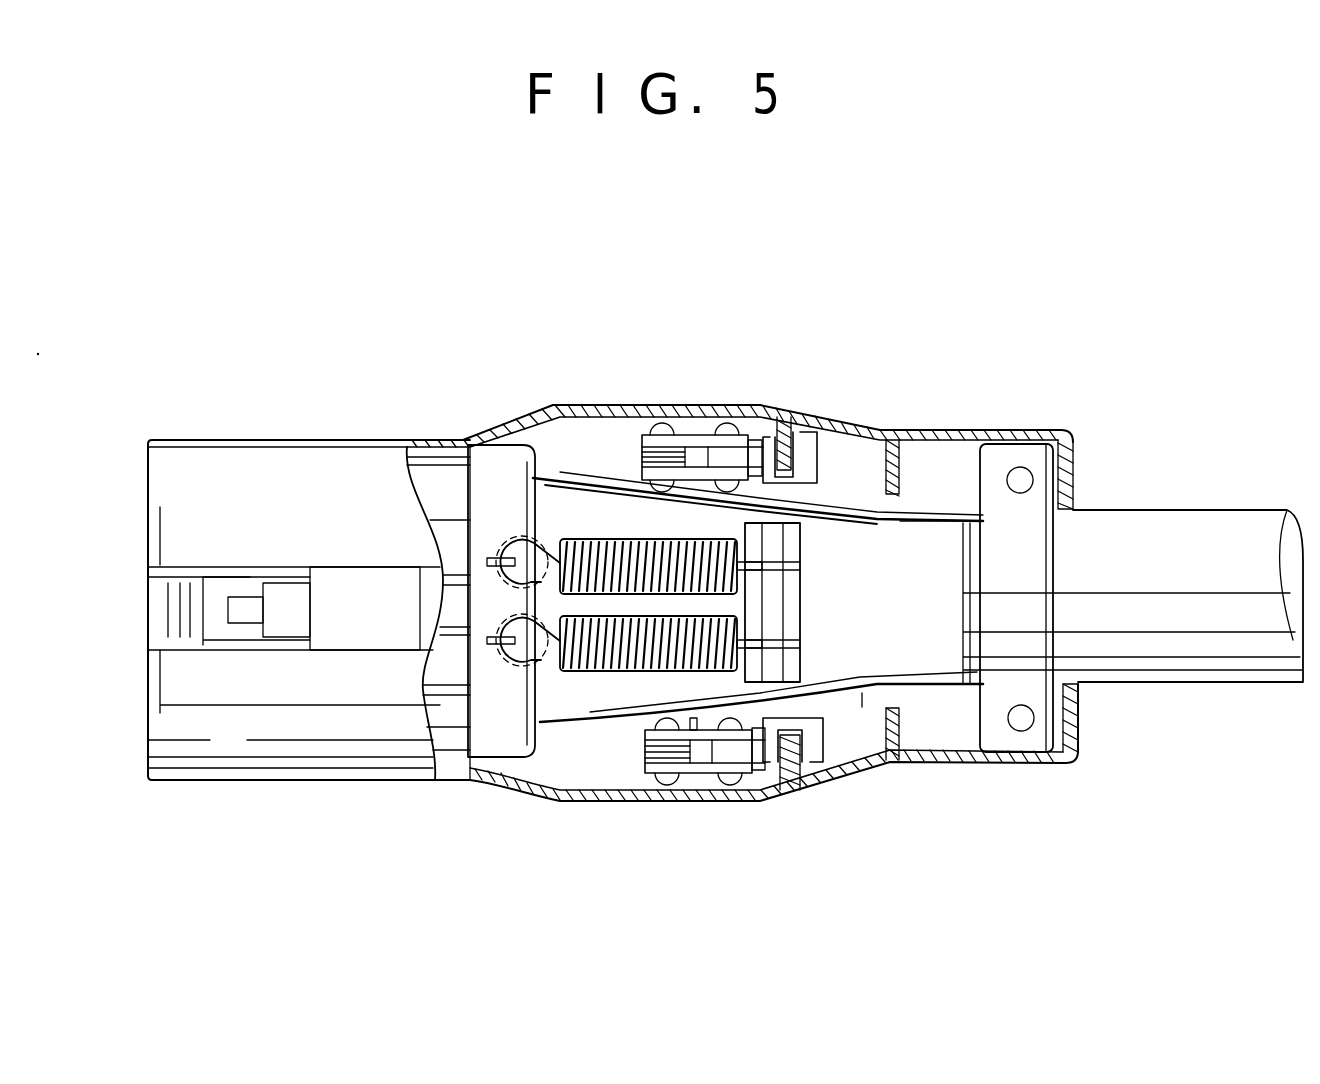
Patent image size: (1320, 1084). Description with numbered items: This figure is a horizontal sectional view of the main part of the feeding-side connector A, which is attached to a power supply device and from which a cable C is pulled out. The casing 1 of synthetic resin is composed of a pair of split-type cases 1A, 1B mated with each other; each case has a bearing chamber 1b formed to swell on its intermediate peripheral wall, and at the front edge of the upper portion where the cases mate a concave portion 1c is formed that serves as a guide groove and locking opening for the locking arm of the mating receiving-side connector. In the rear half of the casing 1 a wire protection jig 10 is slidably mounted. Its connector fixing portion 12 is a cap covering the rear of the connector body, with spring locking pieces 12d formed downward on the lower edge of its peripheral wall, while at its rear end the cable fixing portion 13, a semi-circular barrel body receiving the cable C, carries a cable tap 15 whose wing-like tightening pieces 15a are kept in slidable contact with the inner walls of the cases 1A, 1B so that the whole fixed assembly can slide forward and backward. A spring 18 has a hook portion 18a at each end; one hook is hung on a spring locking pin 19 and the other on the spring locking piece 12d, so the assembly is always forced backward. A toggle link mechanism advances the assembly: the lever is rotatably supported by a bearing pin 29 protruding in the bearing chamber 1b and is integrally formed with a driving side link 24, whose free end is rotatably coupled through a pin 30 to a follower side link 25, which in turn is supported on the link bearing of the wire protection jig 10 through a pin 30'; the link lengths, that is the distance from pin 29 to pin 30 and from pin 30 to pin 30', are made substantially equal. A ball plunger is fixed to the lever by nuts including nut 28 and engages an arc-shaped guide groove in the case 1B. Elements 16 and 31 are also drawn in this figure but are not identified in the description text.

The casing 1 is at (263, 782).
The split-type case 1A is at (570, 803).
The split-type case 1B is at (520, 413).
The bearing chamber 1b is at (870, 770).
The concave portion 1c is at (225, 632).
The wire protection jig 10 is at (926, 503).
The connector fixing portion 12 is at (490, 770).
The spring locking piece 12d is at (490, 641).
The cable fixing portion 13 is at (1058, 628).
The cable tap 15 is at (1108, 543).
The tightening piece 15a is at (1045, 486).
The fixing hole 16 is at (1020, 467).
The spring 18 is at (622, 539).
The hook portion 18a is at (553, 540).
The spring locking pin 19 is at (768, 530).
The driving side link 24 is at (763, 773).
The follower side link 25 is at (700, 775).
The nut 28 is at (820, 733).
The bearing pin 29 is at (800, 767).
The pin 30 is at (754, 657).
The pin 30' is at (656, 649).
The terminal 31 is at (248, 597).
The feeding-side connector A is at (868, 360).
The cable C is at (1235, 520).